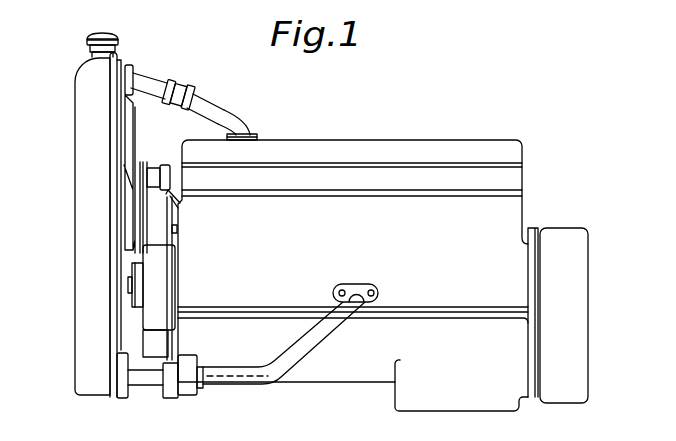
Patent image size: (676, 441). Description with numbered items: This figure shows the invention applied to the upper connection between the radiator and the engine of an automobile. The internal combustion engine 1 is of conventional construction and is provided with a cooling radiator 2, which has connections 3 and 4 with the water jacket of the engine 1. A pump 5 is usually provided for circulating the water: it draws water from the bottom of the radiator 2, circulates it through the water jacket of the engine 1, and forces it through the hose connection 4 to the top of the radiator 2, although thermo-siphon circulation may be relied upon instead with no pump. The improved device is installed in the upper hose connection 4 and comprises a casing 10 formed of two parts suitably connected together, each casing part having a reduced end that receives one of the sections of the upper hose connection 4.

The internal combustion engine 1 is at (373, 137).
The cooling radiator 2 is at (88, 262).
The connection 3 is at (256, 388).
The hose connection 4 is at (229, 116).
The pump 5 is at (183, 398).
The casing 10 is at (186, 88).